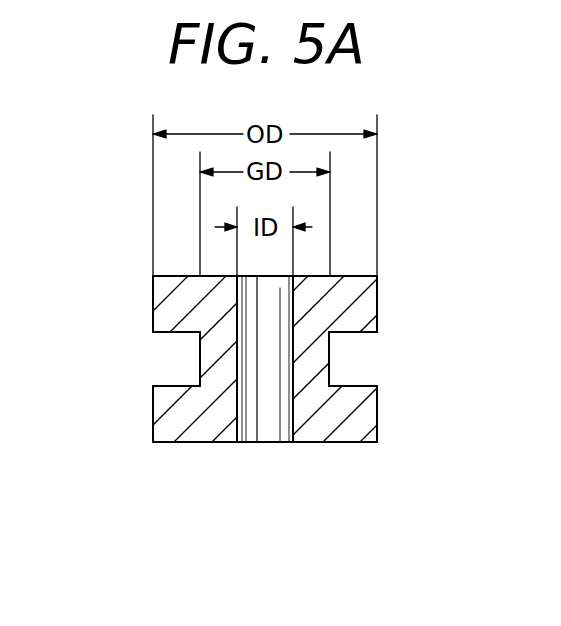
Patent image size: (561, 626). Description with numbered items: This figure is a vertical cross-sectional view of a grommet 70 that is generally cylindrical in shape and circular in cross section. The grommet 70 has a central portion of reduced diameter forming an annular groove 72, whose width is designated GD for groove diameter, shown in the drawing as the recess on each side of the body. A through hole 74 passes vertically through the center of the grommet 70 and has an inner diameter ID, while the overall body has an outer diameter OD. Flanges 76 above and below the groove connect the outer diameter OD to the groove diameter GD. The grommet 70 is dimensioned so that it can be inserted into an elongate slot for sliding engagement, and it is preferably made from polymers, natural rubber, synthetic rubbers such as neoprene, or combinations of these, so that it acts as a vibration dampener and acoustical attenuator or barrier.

The grommet 70 is at (111, 291).
The annular groove 72 is at (358, 357).
The through hole 74 is at (270, 308).
The flanges 76 is at (181, 334).